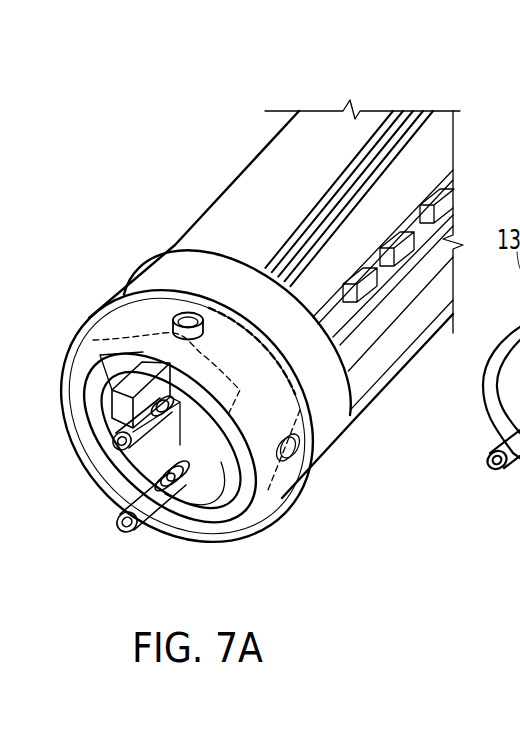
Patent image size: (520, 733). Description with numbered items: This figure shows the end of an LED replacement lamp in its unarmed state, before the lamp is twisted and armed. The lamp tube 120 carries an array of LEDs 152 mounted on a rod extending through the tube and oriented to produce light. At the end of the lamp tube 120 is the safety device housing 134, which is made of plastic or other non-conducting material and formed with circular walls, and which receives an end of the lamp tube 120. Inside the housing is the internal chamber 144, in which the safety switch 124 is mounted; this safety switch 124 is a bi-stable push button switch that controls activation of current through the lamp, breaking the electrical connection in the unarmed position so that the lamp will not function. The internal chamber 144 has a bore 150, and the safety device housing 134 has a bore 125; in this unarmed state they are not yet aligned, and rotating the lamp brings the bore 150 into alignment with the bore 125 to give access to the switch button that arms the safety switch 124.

The lamp tube 120 is at (255, 158).
The safety switch 124 is at (204, 448).
The bore 125 is at (186, 313).
The safety device housing 134 is at (134, 293).
The internal chamber 144 is at (256, 515).
The bore 150 is at (293, 456).
The LEDs 152 is at (440, 208).